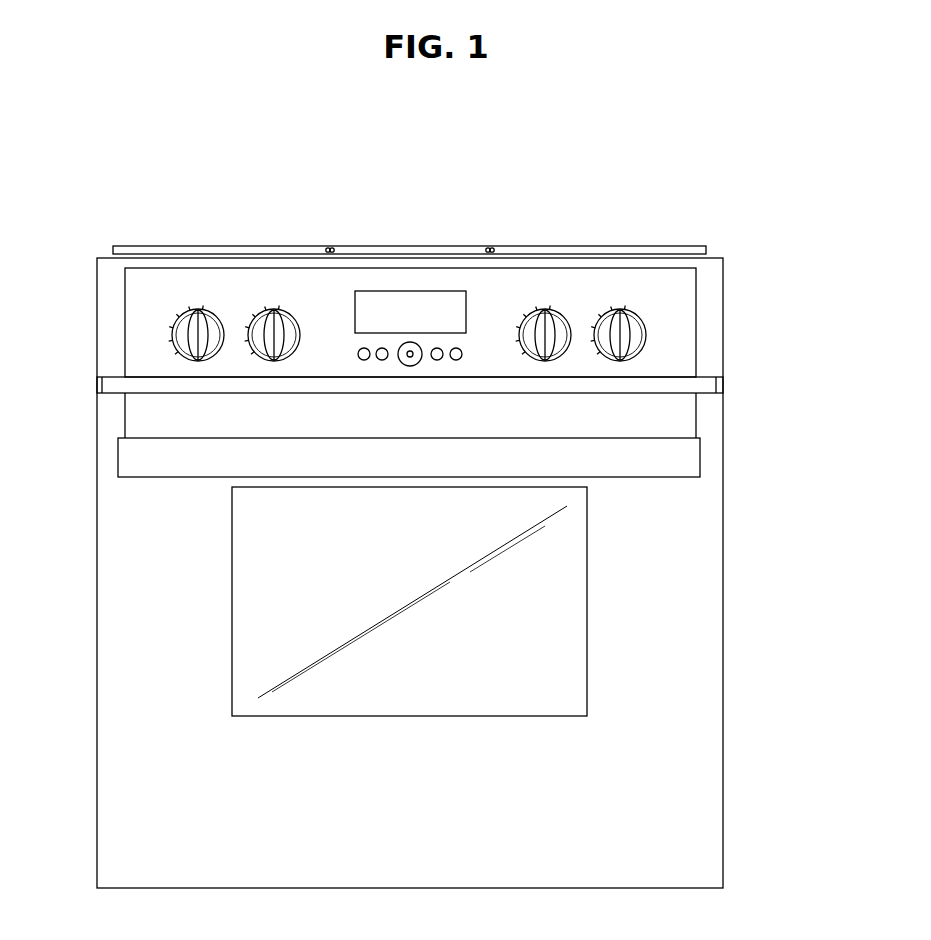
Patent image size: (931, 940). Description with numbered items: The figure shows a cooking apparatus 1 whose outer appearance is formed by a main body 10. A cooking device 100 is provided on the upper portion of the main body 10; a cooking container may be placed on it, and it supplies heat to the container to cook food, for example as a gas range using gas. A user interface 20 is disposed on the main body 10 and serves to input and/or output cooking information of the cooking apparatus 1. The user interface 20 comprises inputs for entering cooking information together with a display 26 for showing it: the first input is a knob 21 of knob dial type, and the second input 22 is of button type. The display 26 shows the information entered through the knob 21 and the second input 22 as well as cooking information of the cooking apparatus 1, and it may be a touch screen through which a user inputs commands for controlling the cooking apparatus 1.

The cooking apparatus 1 is at (507, 172).
The cooking device 100 is at (731, 248).
The main body 10 is at (723, 555).
The user interface 20 is at (650, 332).
The knob 21 is at (170, 330).
The second input 22 is at (360, 340).
The display 26 is at (444, 302).